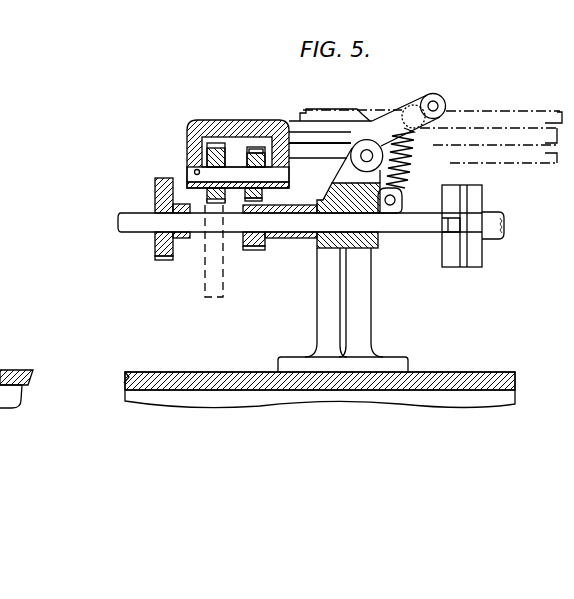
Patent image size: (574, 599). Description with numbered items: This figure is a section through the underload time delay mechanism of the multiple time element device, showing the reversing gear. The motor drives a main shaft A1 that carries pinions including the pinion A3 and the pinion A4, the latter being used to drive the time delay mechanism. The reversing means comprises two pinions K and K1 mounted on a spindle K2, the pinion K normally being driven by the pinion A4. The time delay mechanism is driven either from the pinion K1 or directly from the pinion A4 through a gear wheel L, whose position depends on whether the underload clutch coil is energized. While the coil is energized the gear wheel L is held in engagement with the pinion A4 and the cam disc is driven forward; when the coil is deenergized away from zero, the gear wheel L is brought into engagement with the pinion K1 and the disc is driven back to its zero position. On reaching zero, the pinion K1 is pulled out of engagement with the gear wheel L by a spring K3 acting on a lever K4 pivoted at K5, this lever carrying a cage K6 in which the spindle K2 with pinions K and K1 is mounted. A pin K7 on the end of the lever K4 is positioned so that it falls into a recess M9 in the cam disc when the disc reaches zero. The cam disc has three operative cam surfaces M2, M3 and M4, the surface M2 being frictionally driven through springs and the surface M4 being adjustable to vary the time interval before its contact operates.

The cage K6 is at (190, 133).
The spindle K2 is at (190, 168).
The pinion K1 is at (215, 143).
The pinion K is at (254, 146).
The lever K4 is at (315, 130).
The recess M9 is at (357, 110).
The pivot K5 is at (367, 153).
The pin K7 is at (433, 101).
The spring K3 is at (420, 150).
The cam surface M4 is at (543, 122).
The cam surface M3 is at (541, 140).
The cam surface M2 is at (550, 157).
The pinion A3 is at (160, 247).
The gear wheel L is at (205, 283).
The pinion A4 is at (257, 250).
The main shaft A1 is at (403, 228).